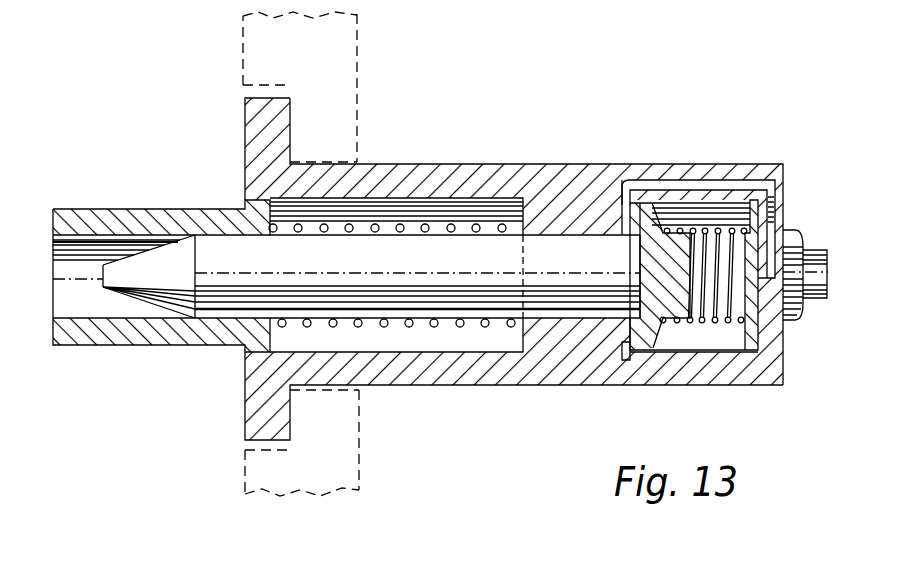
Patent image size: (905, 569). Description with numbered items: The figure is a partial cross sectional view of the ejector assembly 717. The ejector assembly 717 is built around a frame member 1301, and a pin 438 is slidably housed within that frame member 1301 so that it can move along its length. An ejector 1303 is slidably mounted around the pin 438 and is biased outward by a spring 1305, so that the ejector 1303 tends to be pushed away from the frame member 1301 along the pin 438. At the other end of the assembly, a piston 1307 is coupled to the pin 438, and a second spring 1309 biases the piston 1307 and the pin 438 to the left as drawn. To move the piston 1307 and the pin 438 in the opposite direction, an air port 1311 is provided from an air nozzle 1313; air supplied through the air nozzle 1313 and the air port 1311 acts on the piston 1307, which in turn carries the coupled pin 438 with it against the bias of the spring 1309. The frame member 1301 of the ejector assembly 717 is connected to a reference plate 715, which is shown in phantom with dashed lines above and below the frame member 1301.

The reference plate 715 is at (353, 78).
The ejector assembly 717 is at (504, 118).
The pin 438 is at (562, 247).
The frame member 1301 is at (546, 378).
The ejector 1303 is at (122, 346).
The spring 1305 is at (412, 316).
The piston 1307 is at (646, 183).
The spring 1309 is at (713, 223).
The air port 1311 is at (682, 185).
The air nozzle 1313 is at (815, 250).